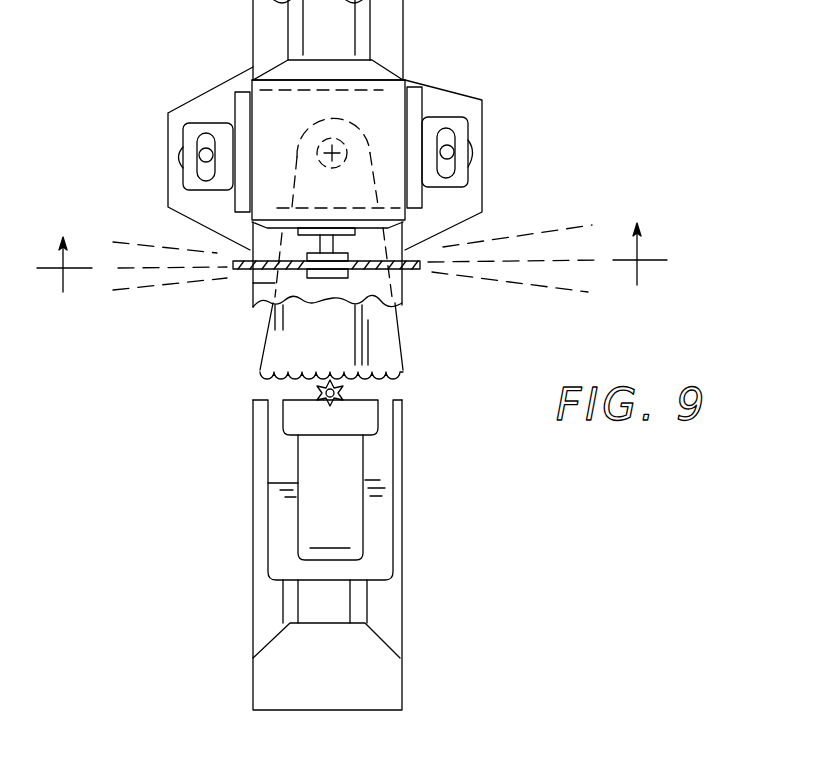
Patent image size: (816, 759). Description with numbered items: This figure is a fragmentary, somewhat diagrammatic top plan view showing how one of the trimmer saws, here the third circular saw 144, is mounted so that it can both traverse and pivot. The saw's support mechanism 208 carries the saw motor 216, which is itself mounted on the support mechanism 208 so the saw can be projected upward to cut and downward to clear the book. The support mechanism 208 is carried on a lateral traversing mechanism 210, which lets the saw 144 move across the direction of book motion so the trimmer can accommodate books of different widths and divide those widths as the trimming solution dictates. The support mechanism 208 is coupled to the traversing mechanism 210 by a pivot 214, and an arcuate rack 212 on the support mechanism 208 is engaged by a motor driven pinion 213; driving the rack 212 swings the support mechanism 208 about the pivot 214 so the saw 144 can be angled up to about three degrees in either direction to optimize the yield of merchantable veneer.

The third circular saw 144 is at (173, 343).
The support mechanism 208 is at (465, 198).
The lateral traversing mechanism 210 is at (418, 610).
The arcuate rack 212 is at (397, 378).
The motor driven pinion 213 is at (310, 390).
The pivot 214 is at (317, 140).
The saw motor 216 is at (380, 100).